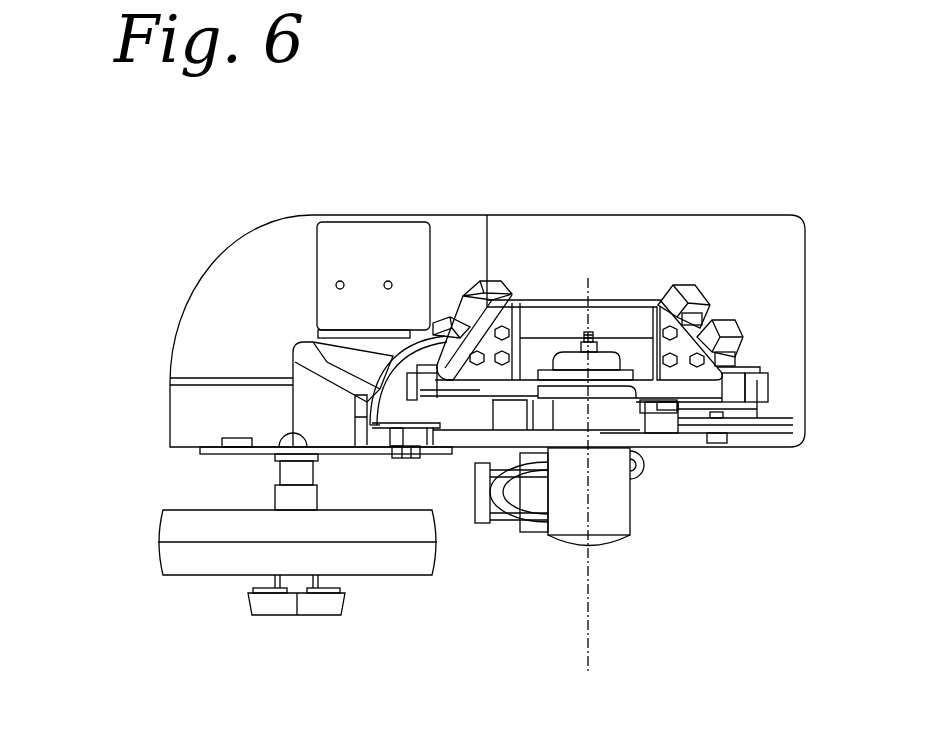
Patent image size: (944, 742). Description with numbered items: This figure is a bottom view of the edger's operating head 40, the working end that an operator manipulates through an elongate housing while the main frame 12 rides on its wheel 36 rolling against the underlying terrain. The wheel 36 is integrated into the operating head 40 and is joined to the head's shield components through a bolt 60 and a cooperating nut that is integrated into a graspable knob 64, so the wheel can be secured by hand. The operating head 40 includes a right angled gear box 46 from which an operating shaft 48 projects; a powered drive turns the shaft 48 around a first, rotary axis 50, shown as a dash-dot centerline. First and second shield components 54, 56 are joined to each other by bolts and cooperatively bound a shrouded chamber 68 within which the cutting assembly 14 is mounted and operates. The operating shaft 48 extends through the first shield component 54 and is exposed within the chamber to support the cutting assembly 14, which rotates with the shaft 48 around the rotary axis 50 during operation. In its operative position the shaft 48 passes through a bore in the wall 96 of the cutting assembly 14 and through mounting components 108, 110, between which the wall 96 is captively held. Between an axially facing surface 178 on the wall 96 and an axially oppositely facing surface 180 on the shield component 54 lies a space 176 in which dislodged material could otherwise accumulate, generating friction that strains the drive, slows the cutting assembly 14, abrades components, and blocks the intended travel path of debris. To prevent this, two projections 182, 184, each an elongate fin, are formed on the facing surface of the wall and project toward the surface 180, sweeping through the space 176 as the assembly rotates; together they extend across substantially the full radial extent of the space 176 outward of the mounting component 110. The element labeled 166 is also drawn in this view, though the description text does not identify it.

The main frame 12 is at (150, 517).
The cutting assembly 14 is at (616, 296).
The wheel 36 is at (400, 558).
The operating head 40 is at (525, 129).
The right angled gear box 46 is at (605, 500).
The operating shaft 48 is at (588, 330).
The first, rotary axis 50 is at (588, 637).
The first shield component 54 is at (468, 408).
The second shield component 56 is at (238, 300).
The bolt 60 is at (290, 437).
The graspable knob 64 is at (322, 615).
The shrouded chamber 68 is at (569, 258).
The wall 96 is at (513, 300).
The mounting component 108 is at (610, 353).
The mounting component 110 is at (613, 393).
The fastener block 166 is at (693, 290).
The space 176 is at (452, 396).
The axially facing surface 178 is at (533, 455).
The axially oppositely facing surface 180 is at (470, 397).
The projection 182 is at (432, 397).
The projection 184 is at (690, 300).